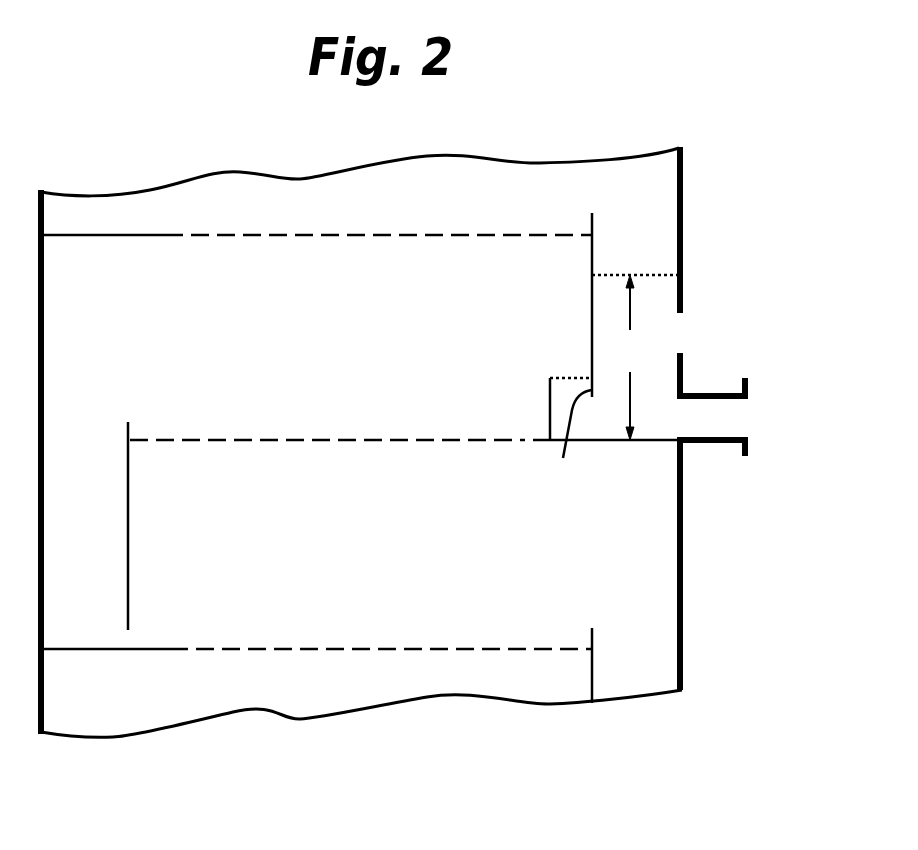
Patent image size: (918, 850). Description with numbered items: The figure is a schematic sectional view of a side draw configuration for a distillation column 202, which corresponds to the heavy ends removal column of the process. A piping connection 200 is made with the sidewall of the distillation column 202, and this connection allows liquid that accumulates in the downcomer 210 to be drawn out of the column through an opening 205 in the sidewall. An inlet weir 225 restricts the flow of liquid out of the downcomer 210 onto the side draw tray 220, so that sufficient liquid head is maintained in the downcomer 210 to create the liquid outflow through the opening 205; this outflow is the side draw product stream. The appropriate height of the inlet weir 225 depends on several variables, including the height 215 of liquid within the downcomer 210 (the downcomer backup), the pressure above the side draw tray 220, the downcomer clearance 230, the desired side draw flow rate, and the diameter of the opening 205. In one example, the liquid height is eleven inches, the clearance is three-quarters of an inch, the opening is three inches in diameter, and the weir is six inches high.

The piping connection 200 is at (709, 392).
The distillation column 202 is at (683, 581).
The opening 205 is at (733, 421).
The downcomer 210 is at (650, 233).
The height of liquid within downcomer 215 is at (636, 357).
The side draw tray 220 is at (302, 440).
The inlet weir 225 is at (548, 398).
The downcomer clearance 230 is at (560, 443).